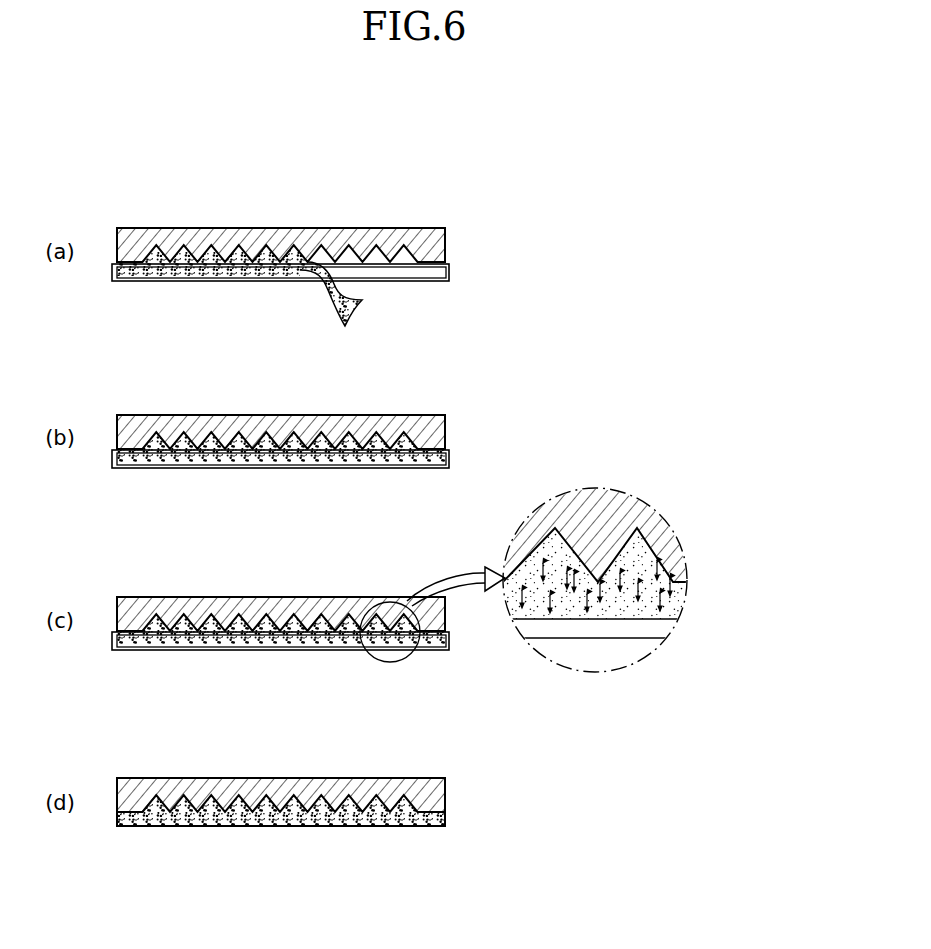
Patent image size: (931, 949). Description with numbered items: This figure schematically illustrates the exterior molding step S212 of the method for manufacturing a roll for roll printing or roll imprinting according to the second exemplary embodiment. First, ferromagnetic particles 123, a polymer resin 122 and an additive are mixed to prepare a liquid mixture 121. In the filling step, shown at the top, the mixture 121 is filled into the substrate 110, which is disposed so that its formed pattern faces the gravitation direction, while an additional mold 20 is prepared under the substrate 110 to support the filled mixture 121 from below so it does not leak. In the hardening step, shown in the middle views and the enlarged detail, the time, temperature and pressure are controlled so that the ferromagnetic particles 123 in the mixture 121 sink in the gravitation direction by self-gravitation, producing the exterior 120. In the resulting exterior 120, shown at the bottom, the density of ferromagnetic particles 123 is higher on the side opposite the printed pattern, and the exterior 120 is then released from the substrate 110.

The substrate 110 is at (447, 243).
The additional mold 20 is at (452, 272).
The liquid mixture 121 is at (323, 301).
The polymer resin 122 is at (677, 592).
The ferromagnetic particles 123 is at (662, 556).
The exterior 120 is at (293, 821).
The exterior molding step S212 is at (548, 186).